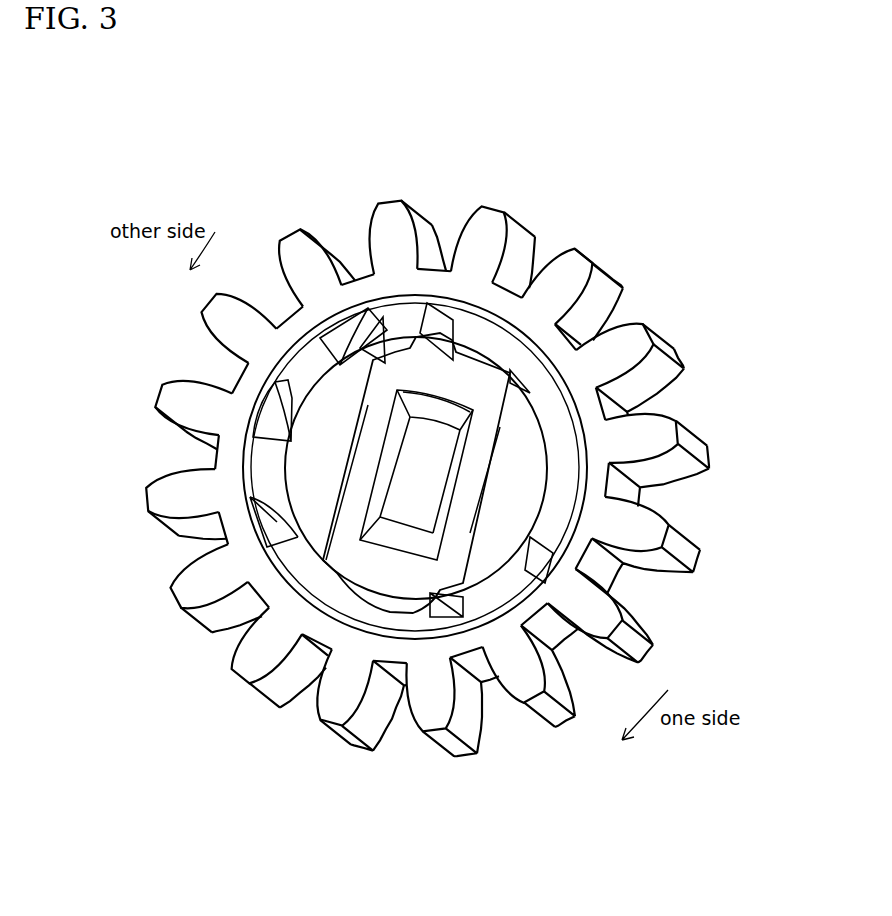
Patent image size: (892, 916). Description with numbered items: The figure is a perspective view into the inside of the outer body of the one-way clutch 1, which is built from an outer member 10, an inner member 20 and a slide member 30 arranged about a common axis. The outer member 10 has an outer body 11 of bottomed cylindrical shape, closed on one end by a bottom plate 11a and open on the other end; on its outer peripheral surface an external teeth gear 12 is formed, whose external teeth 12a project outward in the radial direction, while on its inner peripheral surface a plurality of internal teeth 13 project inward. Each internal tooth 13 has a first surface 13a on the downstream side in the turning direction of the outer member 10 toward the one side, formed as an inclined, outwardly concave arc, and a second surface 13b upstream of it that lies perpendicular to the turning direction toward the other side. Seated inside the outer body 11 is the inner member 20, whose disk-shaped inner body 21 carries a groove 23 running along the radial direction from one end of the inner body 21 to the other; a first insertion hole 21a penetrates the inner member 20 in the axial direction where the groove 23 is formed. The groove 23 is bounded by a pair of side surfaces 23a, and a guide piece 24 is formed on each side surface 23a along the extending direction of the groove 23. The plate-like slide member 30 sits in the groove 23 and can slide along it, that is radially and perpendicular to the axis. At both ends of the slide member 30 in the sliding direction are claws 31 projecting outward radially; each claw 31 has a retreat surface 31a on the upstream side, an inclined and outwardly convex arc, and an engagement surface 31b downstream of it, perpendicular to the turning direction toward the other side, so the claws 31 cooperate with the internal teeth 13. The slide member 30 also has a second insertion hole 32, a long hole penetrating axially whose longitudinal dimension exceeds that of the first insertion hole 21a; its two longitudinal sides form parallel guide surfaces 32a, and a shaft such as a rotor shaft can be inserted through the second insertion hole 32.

The one-way clutch 1 is at (690, 246).
The outer member 10 is at (297, 723).
The outer body 11 is at (500, 297).
The bottom plate 11a is at (277, 482).
The external teeth gear 12 is at (238, 683).
The external teeth 12a is at (185, 590).
The internal teeth 13 is at (267, 418).
The first surface 13a is at (283, 385).
The second surface 13b is at (217, 457).
The inner member 20 is at (301, 564).
The inner body 21 is at (277, 507).
The first insertion hole 21a is at (407, 447).
The groove 23 is at (500, 363).
The side surfaces 23a is at (388, 333).
The guide piece 24 is at (353, 413).
The slide member 30 is at (300, 612).
The claws 31 is at (427, 340).
The retreat surface 31a is at (420, 327).
The engagement surface 31b is at (473, 340).
The second insertion hole 32 is at (470, 493).
The guide surfaces 32a is at (497, 388).